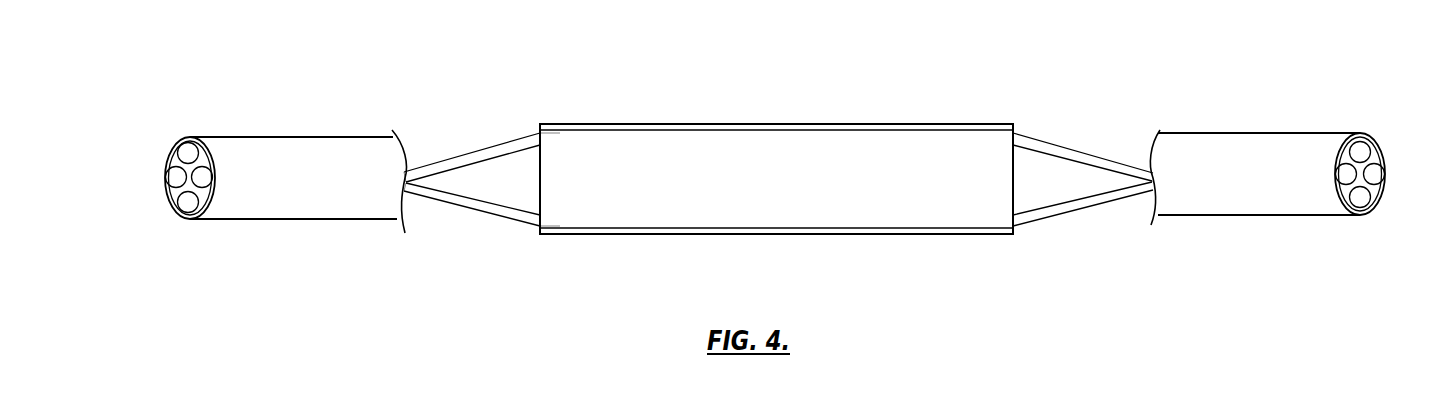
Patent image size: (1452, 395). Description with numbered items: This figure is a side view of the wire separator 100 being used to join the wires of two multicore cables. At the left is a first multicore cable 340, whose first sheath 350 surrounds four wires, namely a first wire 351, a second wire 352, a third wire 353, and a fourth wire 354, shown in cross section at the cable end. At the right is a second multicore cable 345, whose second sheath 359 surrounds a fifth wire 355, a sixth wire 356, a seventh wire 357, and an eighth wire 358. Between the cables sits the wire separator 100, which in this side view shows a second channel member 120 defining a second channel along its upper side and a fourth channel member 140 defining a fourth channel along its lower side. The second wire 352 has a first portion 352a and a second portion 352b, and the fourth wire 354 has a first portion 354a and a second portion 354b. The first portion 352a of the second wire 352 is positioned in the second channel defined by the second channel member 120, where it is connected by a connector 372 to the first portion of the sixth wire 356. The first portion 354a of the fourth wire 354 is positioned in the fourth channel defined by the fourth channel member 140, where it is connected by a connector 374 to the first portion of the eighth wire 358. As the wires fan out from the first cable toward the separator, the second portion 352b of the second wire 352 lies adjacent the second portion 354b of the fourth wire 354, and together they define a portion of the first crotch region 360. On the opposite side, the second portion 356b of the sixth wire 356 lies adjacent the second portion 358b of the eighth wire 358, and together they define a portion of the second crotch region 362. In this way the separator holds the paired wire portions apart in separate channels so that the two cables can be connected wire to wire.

The wire separator 100 is at (843, 109).
The second channel member 120 is at (726, 124).
The fourth channel member 140 is at (747, 237).
The first multicore cable 340 is at (308, 119).
The second multicore cable 345 is at (1257, 118).
The first sheath 350 is at (167, 160).
The first wire 351 is at (172, 178).
The second wire 352 is at (187, 150).
The third wire 353 is at (185, 205).
The fourth wire 354 is at (205, 183).
The fifth wire 355 is at (1377, 177).
The sixth wire 356 is at (1362, 150).
The seventh wire 357 is at (1363, 198).
The eighth wire 358 is at (1345, 173).
The second sheath 359 is at (1298, 133).
The first crotch region 360 is at (486, 178).
The second crotch region 362 is at (1074, 177).
The connector 372 is at (798, 124).
The connector 374 is at (808, 237).
The first portion of the second wire 352a is at (647, 124).
The first portion of the fourth wire 354a is at (652, 236).
The second portion of the second wire 352b is at (513, 140).
The second portion of the fourth wire 354b is at (510, 212).
The second portion of the sixth wire 356b is at (908, 123).
The second portion of the eighth wire 358b is at (910, 237).